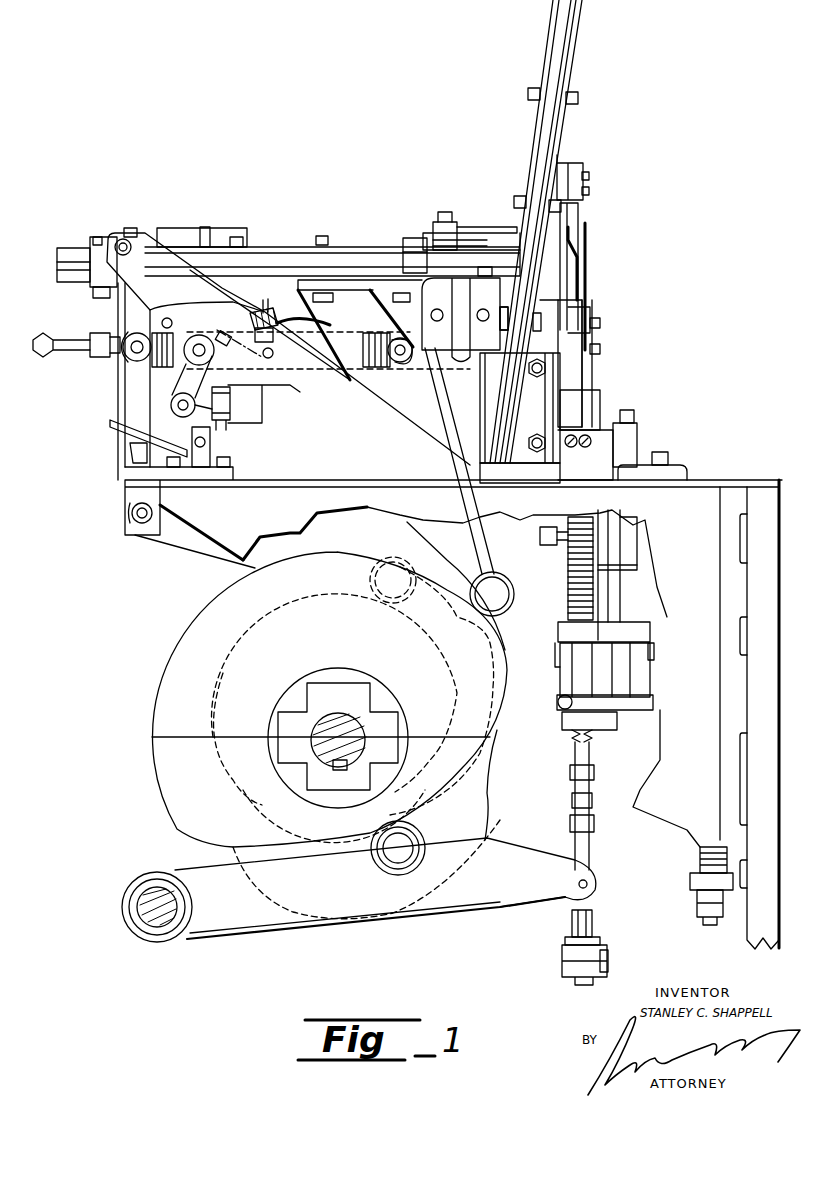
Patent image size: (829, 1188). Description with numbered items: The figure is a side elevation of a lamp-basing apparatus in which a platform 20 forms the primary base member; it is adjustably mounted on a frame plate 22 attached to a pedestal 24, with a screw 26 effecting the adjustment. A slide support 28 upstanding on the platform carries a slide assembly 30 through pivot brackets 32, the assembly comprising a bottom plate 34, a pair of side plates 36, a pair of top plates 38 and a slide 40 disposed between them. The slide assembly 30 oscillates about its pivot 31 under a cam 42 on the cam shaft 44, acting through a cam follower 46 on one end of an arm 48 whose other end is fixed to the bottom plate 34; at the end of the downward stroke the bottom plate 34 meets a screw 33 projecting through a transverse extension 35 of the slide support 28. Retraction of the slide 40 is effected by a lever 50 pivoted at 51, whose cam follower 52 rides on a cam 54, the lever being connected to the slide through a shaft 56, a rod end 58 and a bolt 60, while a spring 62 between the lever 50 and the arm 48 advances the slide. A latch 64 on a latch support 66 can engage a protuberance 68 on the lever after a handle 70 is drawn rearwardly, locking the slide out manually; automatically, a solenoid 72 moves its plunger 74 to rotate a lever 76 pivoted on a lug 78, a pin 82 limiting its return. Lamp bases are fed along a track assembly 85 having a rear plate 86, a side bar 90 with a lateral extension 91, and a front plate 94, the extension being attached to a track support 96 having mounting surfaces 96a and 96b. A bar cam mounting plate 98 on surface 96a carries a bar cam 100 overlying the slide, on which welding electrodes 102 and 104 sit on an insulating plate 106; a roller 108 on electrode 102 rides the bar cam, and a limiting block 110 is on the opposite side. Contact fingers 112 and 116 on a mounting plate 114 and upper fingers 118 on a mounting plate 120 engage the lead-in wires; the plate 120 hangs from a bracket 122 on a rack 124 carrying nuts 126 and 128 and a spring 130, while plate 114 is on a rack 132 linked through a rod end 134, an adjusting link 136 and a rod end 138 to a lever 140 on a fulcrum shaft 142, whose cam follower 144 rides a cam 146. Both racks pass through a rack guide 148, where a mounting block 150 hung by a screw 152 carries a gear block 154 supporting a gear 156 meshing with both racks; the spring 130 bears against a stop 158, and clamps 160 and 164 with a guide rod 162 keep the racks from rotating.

The platform 20 is at (697, 852).
The frame plate 22 is at (718, 900).
The pedestal 24 is at (752, 945).
The screw 26 is at (697, 906).
The slide support 28 is at (135, 282).
The slide assembly 30 is at (190, 160).
The pivot 31 is at (123, 239).
The pivot brackets 32 is at (95, 238).
The screw 33 is at (272, 313).
The bottom plate 34 is at (60, 278).
The transverse extension 35 is at (292, 326).
The side plates 36 is at (57, 262).
The top plates 38 is at (60, 248).
The slide 40 is at (403, 260).
The cam 42 is at (205, 616).
The cam shaft 44 is at (340, 716).
The cam follower 46 is at (502, 614).
The arm 48 is at (380, 390).
The lever 50 is at (125, 315).
The pivot 51 is at (142, 520).
The cam follower 52 is at (392, 557).
The cam 54 is at (489, 792).
The shaft 56 is at (130, 230).
The rod end 58 is at (185, 228).
The bolt 60 is at (225, 228).
The spring 62 is at (132, 362).
The latch 64 is at (113, 425).
The latch support 66 is at (200, 480).
The protuberance 68 is at (130, 455).
The handle 70 is at (45, 352).
The solenoid 72 is at (270, 390).
The plunger 74 is at (228, 420).
The lever 76 is at (172, 400).
The lug 78 is at (193, 335).
The pin 82 is at (170, 318).
The track assembly 85 is at (500, 110).
The rear plate 86 is at (580, 20).
The side bar 90 is at (572, 52).
The lateral extension 91 is at (520, 418).
The front plate 94 is at (552, 20).
The track support 96 is at (455, 392).
The mounting surface 96a is at (548, 302).
The mounting surface 96b is at (448, 352).
The bar cam mounting plate 98 is at (577, 232).
The bar cam 100 is at (498, 228).
The welding electrode 102 is at (418, 238).
The welding electrode 104 is at (418, 238).
The plate of insulating material 106 is at (433, 225).
The roller 108 is at (450, 218).
The limiting block 110 is at (450, 243).
The electrical contact fingers 112 is at (590, 302).
The mounting plate 114 is at (592, 332).
The electrical contact fingers 116 is at (587, 268).
The electrical contact fingers 118 is at (580, 204).
The mounting plate 120 is at (583, 165).
The bracket 122 is at (566, 163).
The rack 124 is at (590, 396).
The nut 126 is at (608, 956).
The nut 128 is at (565, 966).
The spring 130 is at (575, 938).
The rack 132 is at (567, 581).
The rod end 134 is at (594, 773).
The adjusting link 136 is at (595, 812).
The rod end 138 is at (592, 856).
The lever 140 is at (420, 914).
The fulcrum shaft 142 is at (142, 900).
The cam follower 144 is at (372, 850).
The cam 146 is at (222, 681).
The rack guide 148 is at (637, 446).
The mounting block 150 is at (637, 541).
The screw 152 is at (633, 420).
The gear block 154 is at (638, 566).
The gear 156 is at (567, 553).
The stop 158 is at (560, 680).
The clamp 160 is at (653, 705).
The guide rod 162 is at (653, 680).
The clamp 164 is at (655, 652).